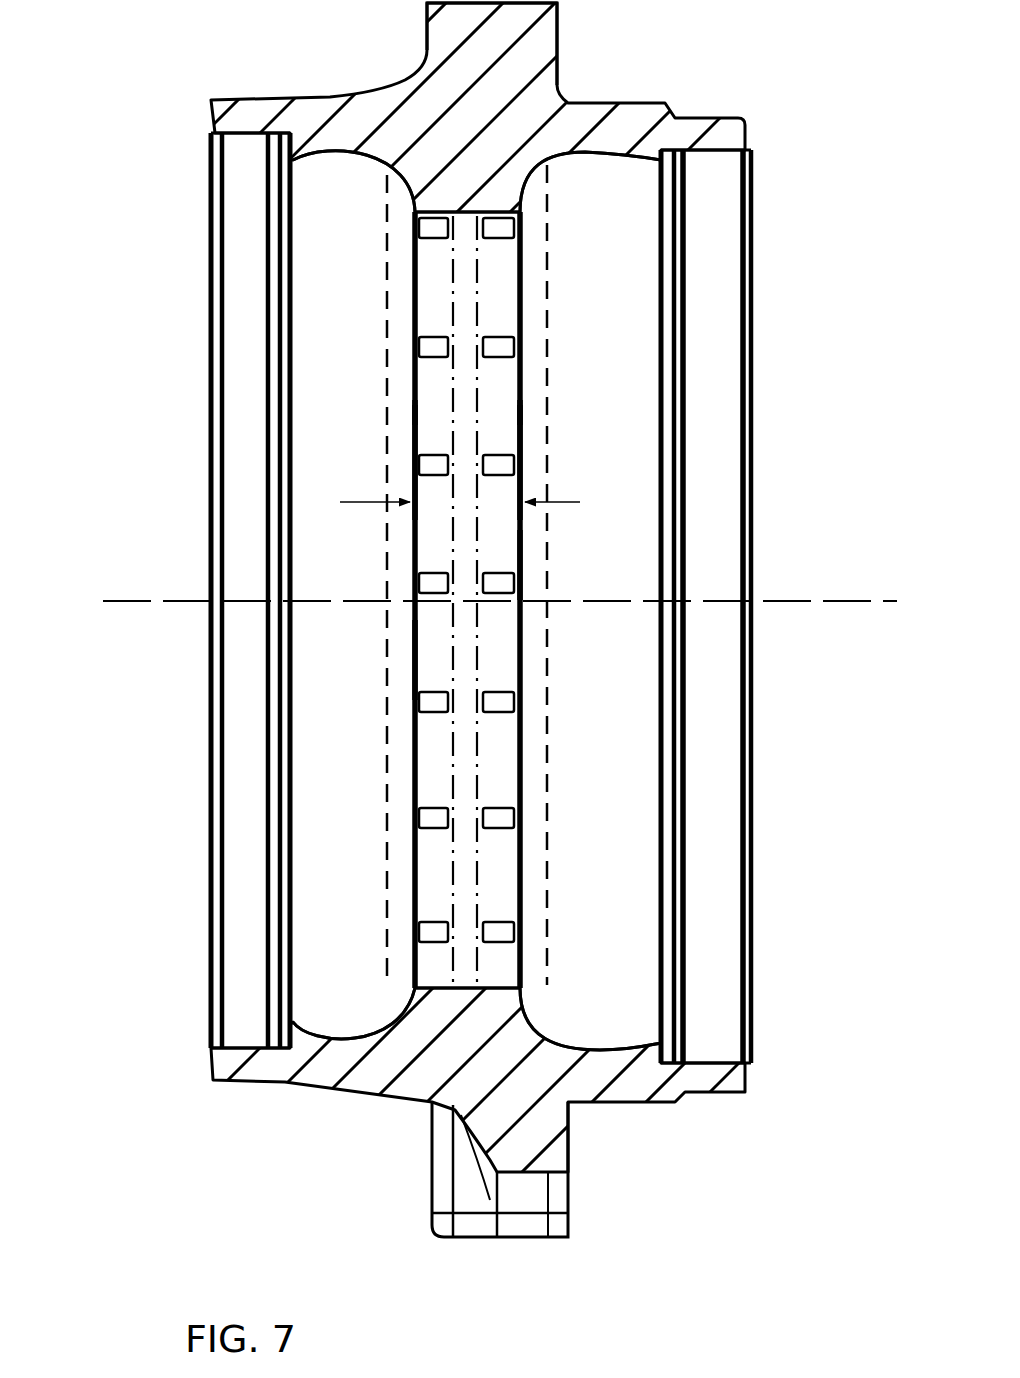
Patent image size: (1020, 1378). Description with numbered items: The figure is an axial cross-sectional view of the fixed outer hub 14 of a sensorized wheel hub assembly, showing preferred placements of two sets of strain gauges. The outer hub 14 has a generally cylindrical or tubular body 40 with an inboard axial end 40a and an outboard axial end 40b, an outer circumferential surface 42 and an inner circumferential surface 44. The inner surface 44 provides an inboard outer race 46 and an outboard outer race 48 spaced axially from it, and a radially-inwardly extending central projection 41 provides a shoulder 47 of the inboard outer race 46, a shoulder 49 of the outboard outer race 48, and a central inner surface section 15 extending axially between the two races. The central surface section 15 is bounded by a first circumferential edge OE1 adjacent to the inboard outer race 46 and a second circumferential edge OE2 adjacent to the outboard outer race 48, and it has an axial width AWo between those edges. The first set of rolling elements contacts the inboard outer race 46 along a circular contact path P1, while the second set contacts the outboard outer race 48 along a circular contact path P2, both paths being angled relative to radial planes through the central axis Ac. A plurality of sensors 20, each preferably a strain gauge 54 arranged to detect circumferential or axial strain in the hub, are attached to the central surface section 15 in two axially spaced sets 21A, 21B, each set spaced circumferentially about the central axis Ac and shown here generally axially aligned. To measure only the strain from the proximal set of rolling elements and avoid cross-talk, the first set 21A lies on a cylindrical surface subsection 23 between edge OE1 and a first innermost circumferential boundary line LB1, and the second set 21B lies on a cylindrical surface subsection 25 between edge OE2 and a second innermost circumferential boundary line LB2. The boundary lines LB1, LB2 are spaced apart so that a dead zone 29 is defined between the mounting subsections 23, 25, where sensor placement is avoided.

The outer hub 14 is at (471, 620).
The body 40 is at (326, 88).
The inboard axial end 40a is at (749, 130).
The outboard axial end 40b is at (213, 108).
The outer circumferential surface 42 is at (624, 96).
The inner circumferential surface 44 is at (712, 160).
The inboard outer race 46 is at (564, 168).
The outboard outer race 48 is at (367, 166).
The shoulder of the inboard outer race 47 is at (540, 1009).
The shoulder of the outboard outer race 49 is at (414, 1004).
The central projection 41 is at (526, 990).
The central inner surface section 15 is at (505, 668).
The sensors 20 is at (432, 232).
The strain gauge 54 is at (432, 343).
The first set of sensors 21A is at (525, 455).
The second set of sensors 21B is at (410, 455).
The first circumferential edge OE1 is at (524, 558).
The second circumferential edge OE2 is at (412, 664).
The axial width AWo is at (484, 506).
The circular contact path P1 is at (549, 315).
The circular contact path P2 is at (387, 315).
The first innermost circumferential boundary line LB1 is at (485, 414).
The second innermost circumferential boundary line LB2 is at (455, 413).
The cylindrical surface subsection 25 is at (430, 748).
The cylindrical surface subsection 23 is at (505, 756).
The dead zone 29 is at (470, 886).
The central axis Ac is at (873, 600).